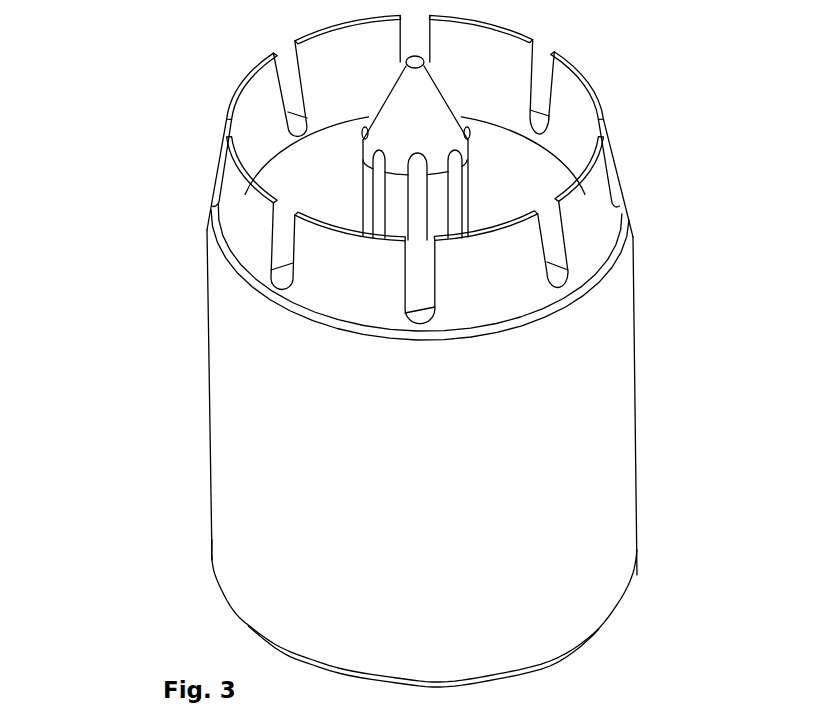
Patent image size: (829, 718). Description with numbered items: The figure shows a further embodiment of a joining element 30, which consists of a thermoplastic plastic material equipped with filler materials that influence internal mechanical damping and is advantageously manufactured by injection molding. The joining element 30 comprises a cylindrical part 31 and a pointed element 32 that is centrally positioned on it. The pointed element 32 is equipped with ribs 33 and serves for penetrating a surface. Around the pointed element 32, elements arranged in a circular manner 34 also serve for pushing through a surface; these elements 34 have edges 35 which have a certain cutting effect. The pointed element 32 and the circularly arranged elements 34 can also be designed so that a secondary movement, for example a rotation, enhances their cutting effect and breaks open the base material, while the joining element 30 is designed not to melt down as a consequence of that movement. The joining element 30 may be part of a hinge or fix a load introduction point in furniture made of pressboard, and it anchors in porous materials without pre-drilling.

The joining element 30 is at (379, 351).
The cylindrical part 31 is at (613, 413).
The pointed element 32 is at (441, 139).
The ribs 33 is at (484, 191).
The elements arranged in a circular manner 34 is at (593, 215).
The edges 35 is at (223, 99).